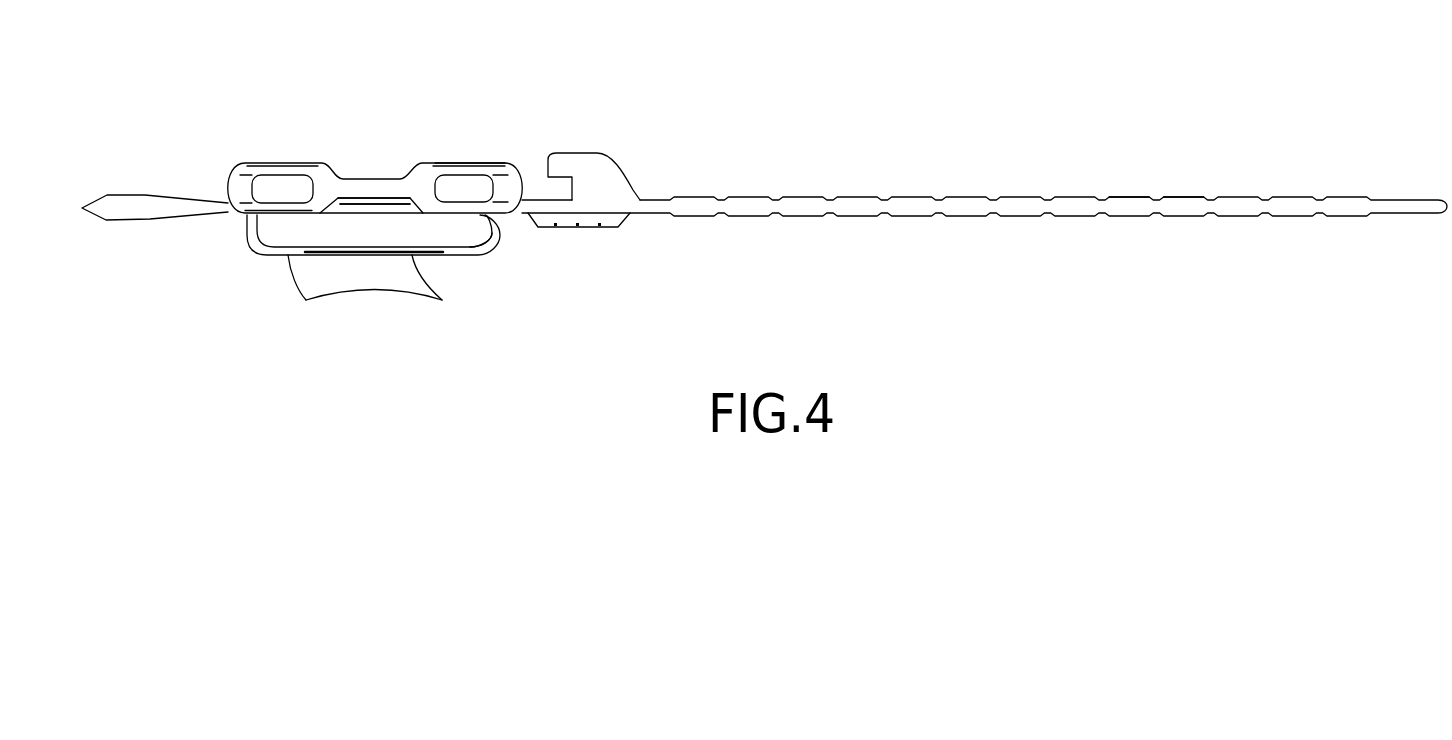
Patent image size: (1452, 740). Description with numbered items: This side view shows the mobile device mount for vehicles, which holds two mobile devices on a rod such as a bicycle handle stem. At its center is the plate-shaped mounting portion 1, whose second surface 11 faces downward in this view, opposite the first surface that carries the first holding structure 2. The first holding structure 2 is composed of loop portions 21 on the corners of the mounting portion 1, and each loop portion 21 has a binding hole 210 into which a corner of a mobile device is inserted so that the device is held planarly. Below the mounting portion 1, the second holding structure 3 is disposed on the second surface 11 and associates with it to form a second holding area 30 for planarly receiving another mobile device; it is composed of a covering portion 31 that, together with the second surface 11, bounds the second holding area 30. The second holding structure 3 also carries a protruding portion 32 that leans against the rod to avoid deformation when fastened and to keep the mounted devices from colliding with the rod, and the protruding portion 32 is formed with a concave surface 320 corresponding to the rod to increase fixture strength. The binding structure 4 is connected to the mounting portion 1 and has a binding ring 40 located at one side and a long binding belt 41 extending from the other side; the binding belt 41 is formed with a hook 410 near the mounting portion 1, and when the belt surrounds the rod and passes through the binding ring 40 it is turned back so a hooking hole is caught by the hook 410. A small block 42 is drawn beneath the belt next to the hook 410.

The mounting portion 1 is at (353, 208).
The second surface 11 is at (373, 212).
The first holding structure 2 is at (276, 158).
The loop portion 21 is at (475, 162).
The binding hole 210 is at (467, 187).
The second holding structure 3 is at (240, 233).
The second holding area 30 is at (449, 229).
The covering portion 31 is at (462, 258).
The protruding portion 32 is at (302, 283).
The concave surface 320 is at (377, 291).
The binding structure 4 is at (1020, 190).
The binding ring 40 is at (130, 203).
The binding belt 41 is at (1157, 212).
The hook 410 is at (575, 160).
The engaging block 42 is at (590, 226).